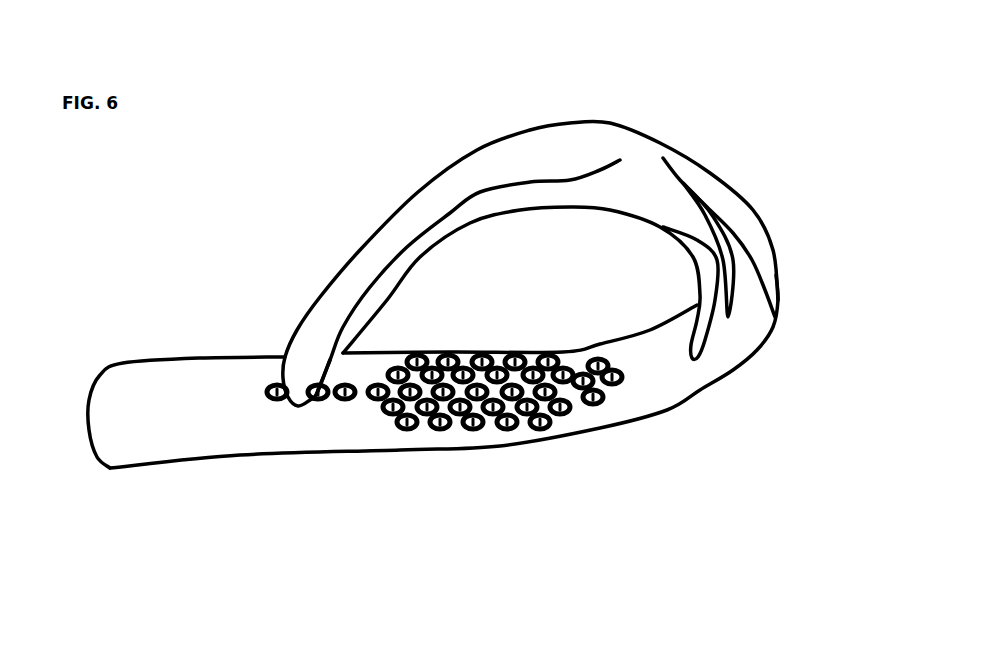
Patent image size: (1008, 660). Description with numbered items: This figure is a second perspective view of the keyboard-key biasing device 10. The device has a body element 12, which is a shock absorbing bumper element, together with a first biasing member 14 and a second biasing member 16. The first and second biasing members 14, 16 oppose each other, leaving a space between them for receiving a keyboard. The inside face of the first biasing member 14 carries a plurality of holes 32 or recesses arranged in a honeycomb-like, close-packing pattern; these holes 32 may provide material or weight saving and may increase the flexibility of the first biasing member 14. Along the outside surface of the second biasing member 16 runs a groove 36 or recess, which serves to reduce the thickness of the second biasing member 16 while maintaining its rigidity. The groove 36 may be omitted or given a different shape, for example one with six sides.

The keyboard-key biasing device 10 is at (753, 133).
The body element 12 is at (760, 212).
The first biasing member 14 is at (248, 456).
The second biasing member 16 is at (424, 192).
The holes 32 is at (493, 425).
The groove 36 is at (504, 178).